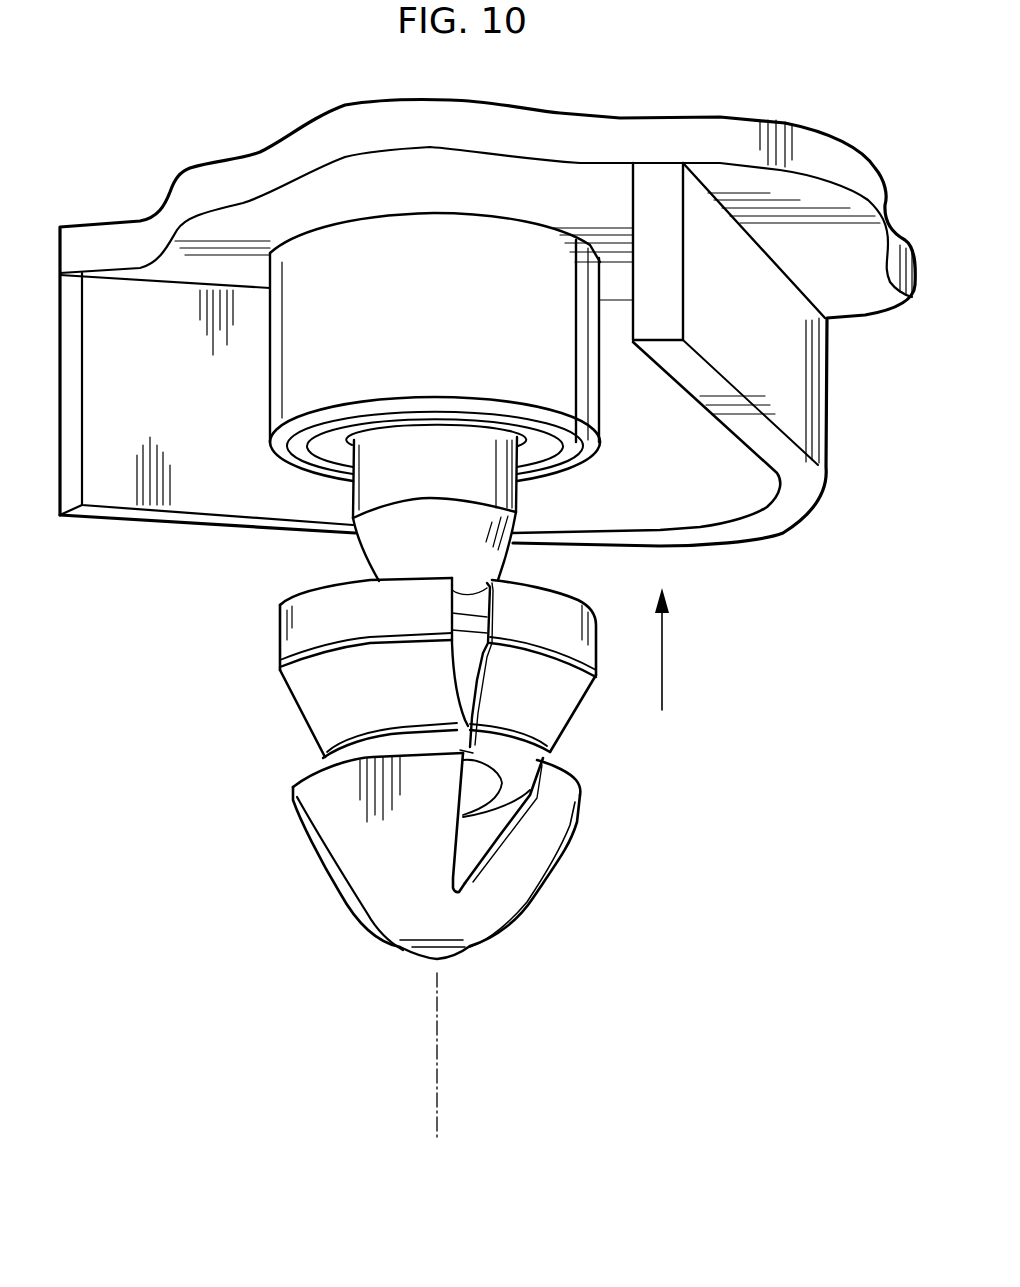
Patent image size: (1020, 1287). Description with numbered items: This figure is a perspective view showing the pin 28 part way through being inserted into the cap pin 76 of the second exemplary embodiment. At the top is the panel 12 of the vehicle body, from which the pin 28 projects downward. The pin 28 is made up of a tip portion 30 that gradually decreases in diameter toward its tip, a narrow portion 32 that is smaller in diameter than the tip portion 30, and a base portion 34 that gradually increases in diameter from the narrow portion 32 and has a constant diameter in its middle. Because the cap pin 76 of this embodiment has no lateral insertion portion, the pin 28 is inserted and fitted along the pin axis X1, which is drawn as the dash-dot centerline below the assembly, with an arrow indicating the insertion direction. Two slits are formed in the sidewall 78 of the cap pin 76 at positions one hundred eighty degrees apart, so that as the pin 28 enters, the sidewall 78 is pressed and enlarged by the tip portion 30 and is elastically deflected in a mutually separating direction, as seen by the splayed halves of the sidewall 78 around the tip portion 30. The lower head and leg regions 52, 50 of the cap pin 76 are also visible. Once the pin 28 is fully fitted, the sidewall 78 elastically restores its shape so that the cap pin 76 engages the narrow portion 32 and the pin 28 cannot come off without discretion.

The panel 12 is at (330, 179).
The pin 28 is at (351, 494).
The base portion 34 is at (503, 488).
The narrow portion 32 is at (473, 603).
The tip portion 30 is at (467, 678).
The sidewall 78 is at (305, 700).
The head portion 52 is at (337, 827).
The leg portion 50 is at (347, 913).
The cap pin 76 is at (523, 960).
The pin axis X1 is at (438, 1113).